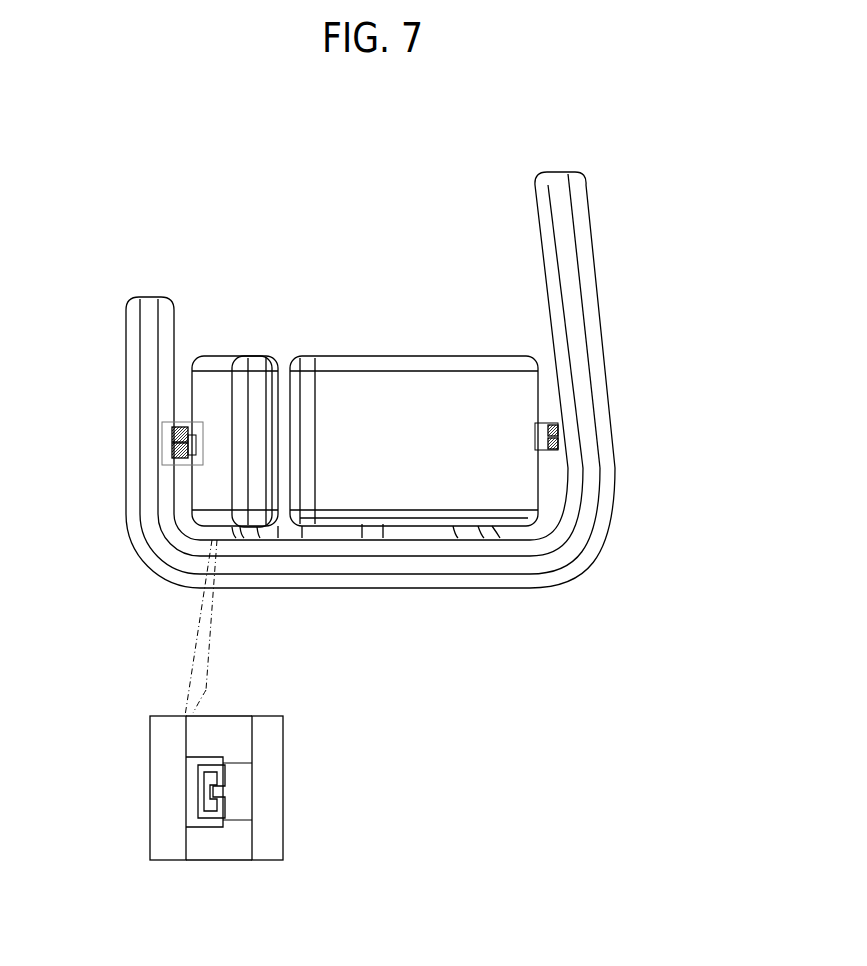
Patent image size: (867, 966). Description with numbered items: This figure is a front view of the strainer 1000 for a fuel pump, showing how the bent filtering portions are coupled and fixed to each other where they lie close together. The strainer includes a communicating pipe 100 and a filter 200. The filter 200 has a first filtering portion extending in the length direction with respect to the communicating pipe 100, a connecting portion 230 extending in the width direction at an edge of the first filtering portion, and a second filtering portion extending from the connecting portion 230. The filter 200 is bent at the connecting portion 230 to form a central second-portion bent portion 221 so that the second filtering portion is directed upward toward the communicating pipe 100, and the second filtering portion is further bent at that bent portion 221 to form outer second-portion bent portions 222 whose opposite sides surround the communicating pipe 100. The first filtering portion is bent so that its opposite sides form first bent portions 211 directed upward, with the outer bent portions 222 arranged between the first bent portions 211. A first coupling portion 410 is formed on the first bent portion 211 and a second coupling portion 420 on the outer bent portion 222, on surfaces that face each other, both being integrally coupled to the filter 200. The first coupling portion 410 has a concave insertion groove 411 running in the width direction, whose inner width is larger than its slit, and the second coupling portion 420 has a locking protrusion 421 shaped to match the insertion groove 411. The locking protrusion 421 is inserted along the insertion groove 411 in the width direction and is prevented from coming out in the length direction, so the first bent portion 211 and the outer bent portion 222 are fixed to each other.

The strainer 1000 is at (172, 170).
The communicating pipe 100 is at (337, 543).
The filter 200 is at (480, 612).
The first bent portion 211 is at (132, 343).
The 2-1-th bent portion 221 is at (283, 368).
The 2-2-th bent portion 222 is at (213, 372).
The connecting portion 230 is at (520, 546).
The first coupling portion 410 is at (162, 414).
The insertion groove 411 is at (197, 785).
The second coupling portion 420 is at (177, 486).
The locking protrusion 421 is at (193, 803).